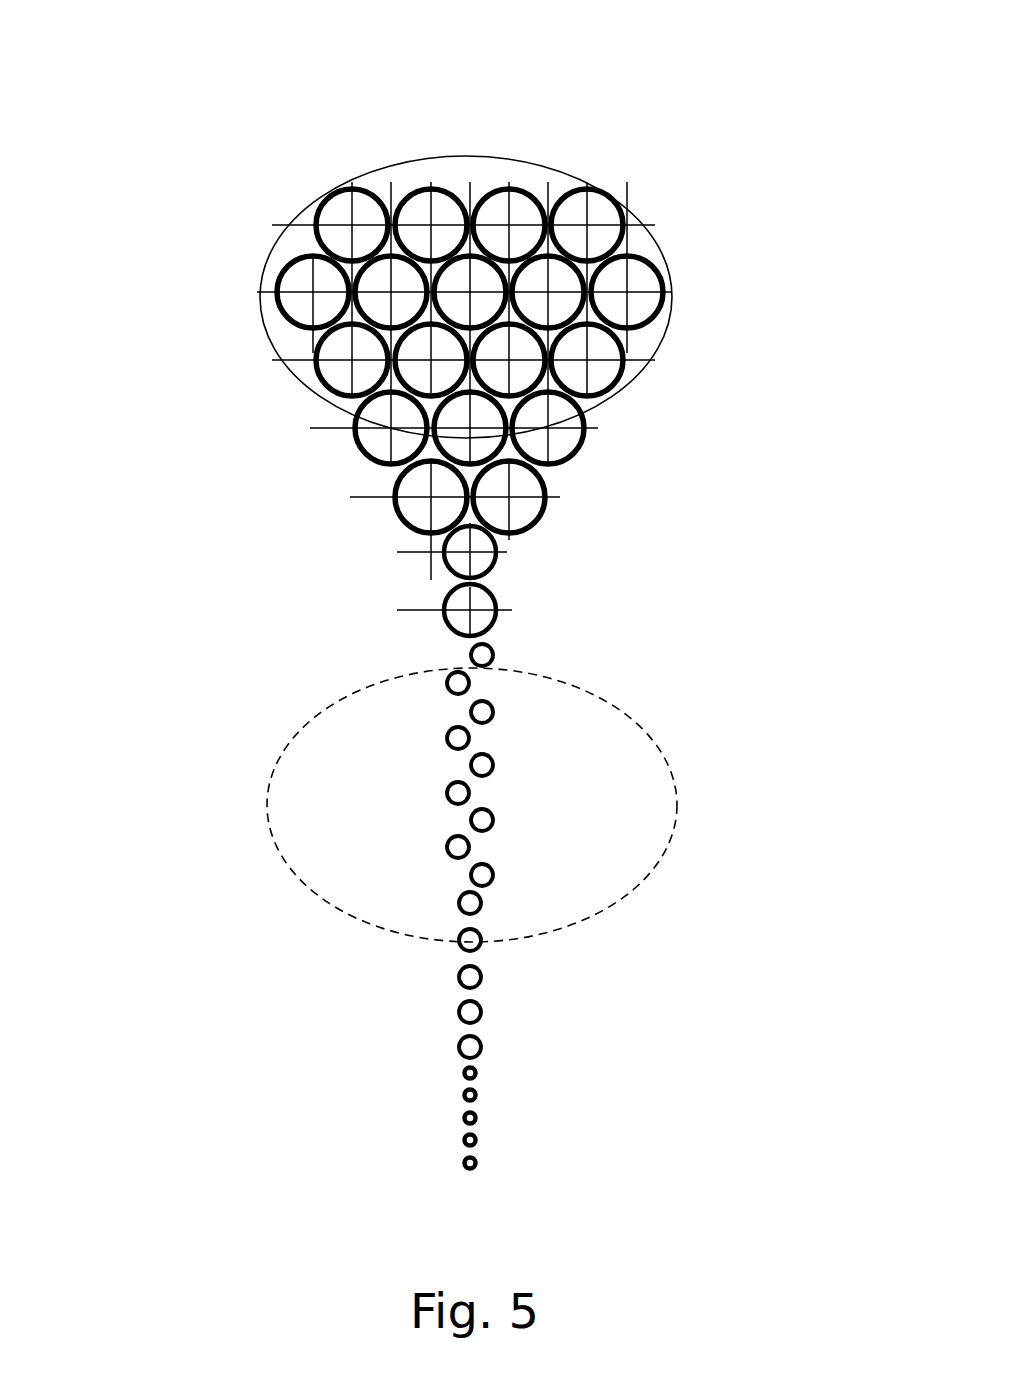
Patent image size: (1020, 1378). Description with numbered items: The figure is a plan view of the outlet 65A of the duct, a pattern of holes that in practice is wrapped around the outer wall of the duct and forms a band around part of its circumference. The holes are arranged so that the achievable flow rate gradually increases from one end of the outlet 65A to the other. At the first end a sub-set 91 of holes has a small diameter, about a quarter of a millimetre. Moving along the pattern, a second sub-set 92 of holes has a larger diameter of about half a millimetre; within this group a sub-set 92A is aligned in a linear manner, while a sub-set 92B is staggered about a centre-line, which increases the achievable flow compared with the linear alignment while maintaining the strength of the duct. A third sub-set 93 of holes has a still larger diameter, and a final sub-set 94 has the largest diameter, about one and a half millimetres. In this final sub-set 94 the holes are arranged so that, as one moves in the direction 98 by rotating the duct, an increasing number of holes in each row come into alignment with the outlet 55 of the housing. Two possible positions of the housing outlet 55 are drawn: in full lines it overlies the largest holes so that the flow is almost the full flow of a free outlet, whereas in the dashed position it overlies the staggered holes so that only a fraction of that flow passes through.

The outlet of the housing 55 is at (395, 163).
The outlet of the duct 65A is at (647, 135).
The final sub-set of holes 94 is at (712, 182).
The third sub-set of holes 93 is at (542, 532).
The second sub-set of holes 92 is at (464, 848).
The staggered sub-set of holes 92B is at (398, 633).
The linear sub-set of holes 92A is at (398, 917).
The first sub-set of holes 91 is at (552, 1062).
The direction of movement 98 is at (129, 257).